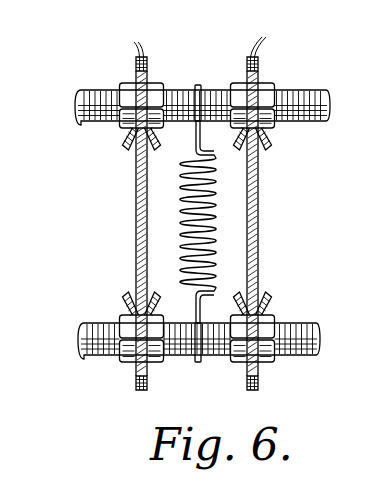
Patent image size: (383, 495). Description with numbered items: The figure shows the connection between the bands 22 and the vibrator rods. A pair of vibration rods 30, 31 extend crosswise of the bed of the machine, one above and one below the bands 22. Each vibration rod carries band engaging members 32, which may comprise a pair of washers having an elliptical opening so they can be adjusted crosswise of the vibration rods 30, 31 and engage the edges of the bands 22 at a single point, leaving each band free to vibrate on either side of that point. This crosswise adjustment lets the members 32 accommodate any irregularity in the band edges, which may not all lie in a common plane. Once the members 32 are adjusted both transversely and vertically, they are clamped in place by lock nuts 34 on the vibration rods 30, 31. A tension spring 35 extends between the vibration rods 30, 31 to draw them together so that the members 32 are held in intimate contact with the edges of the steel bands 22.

The bands 22 is at (138, 193).
The vibration rod 30 is at (317, 90).
The vibration rod 31 is at (300, 323).
The band engaging members 32 is at (170, 43).
The lock nuts 34 is at (127, 84).
The tension springs 35 is at (185, 200).